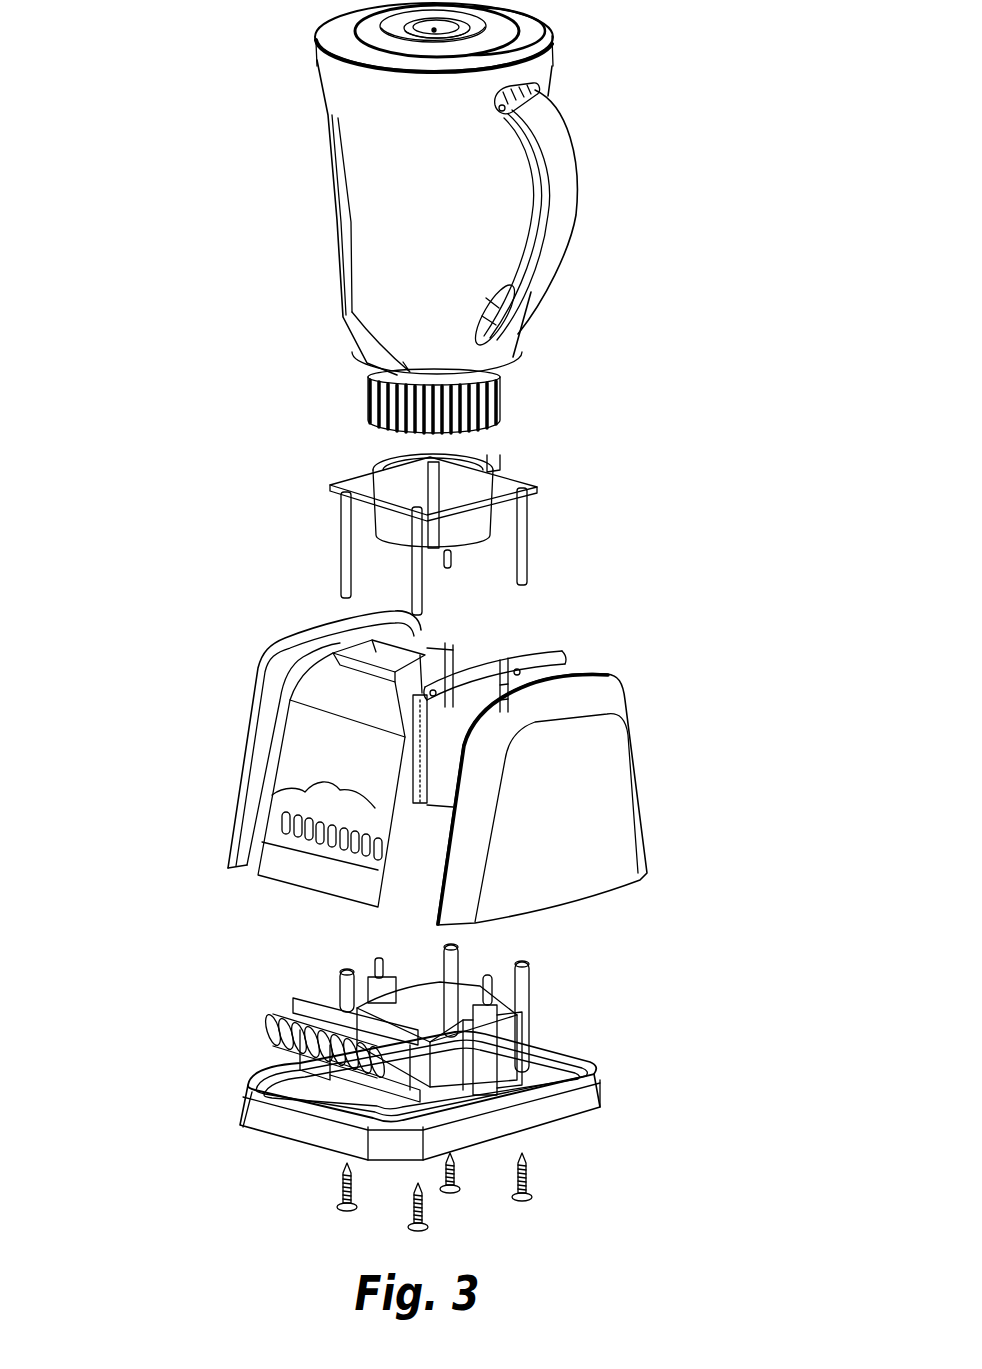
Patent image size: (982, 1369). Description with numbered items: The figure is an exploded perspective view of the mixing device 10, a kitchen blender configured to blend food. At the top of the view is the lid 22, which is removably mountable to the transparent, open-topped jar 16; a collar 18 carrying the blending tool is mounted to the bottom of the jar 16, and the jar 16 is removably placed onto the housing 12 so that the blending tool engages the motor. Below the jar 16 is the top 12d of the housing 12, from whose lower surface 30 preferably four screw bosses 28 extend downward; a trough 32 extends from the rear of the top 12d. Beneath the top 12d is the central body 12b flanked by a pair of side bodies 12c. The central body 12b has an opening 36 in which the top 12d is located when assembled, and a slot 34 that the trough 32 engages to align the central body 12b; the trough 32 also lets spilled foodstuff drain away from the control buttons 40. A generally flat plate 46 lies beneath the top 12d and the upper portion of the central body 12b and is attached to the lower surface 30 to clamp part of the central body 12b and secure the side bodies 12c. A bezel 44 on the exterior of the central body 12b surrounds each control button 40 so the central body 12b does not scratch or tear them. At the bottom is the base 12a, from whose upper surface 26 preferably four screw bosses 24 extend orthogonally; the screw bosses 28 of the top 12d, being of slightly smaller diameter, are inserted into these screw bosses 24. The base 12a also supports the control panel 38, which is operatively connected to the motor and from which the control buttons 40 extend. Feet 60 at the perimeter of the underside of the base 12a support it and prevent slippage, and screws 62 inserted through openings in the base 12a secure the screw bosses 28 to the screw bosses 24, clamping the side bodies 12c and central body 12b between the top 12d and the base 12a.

The mixing device 10 is at (684, 504).
The housing 12 is at (186, 827).
The base 12a is at (550, 1118).
The central body 12b is at (300, 870).
The side bodies 12c is at (270, 652).
The top 12d is at (540, 497).
The jar 16 is at (355, 218).
The collar 18 is at (505, 405).
The lid 22 is at (343, 33).
The screw bosses 24 is at (458, 945).
The upper surface 26 is at (535, 1075).
The screw bosses 28 is at (340, 540).
The lower surface 30 is at (330, 497).
The trough 32 is at (482, 470).
The slot 34 is at (500, 650).
The opening 36 is at (387, 641).
The control panel 38 is at (305, 1010).
The control buttons 40 is at (275, 1042).
The bezel 44 is at (290, 800).
The plate 46 is at (545, 683).
The feet 60 is at (340, 1190).
The screws 62 is at (530, 1205).